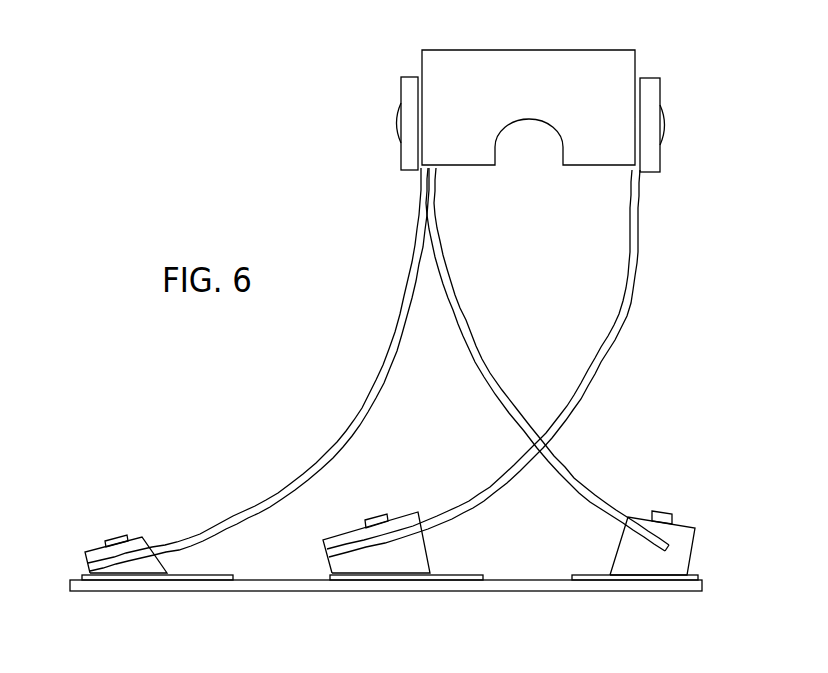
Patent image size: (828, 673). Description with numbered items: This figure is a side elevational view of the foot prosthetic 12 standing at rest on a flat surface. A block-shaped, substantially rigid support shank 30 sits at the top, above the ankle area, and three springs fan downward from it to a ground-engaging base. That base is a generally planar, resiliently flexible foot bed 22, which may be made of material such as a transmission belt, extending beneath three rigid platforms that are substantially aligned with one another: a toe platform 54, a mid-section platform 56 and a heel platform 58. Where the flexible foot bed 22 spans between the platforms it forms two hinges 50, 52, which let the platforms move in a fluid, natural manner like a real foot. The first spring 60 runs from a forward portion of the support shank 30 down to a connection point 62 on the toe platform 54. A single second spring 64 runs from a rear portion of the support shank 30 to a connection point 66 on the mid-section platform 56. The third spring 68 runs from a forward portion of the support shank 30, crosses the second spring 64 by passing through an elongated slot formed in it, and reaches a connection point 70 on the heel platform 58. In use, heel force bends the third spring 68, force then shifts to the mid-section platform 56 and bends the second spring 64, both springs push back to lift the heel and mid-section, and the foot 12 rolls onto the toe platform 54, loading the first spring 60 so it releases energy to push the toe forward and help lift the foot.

The foot prosthetic 12 is at (330, 239).
The foot bed 22 is at (386, 613).
The support shank 30 is at (533, 88).
The hinge 50 is at (216, 618).
The hinge 52 is at (601, 611).
The toe platform 54 is at (123, 548).
The mid-section platform 56 is at (425, 546).
The heel platform 58 is at (674, 548).
The first spring 60 is at (258, 369).
The connection point 62 is at (173, 502).
The second spring 64 is at (522, 363).
The connection point 66 is at (409, 494).
The third spring 68 is at (547, 359).
The connection point 70 is at (695, 496).